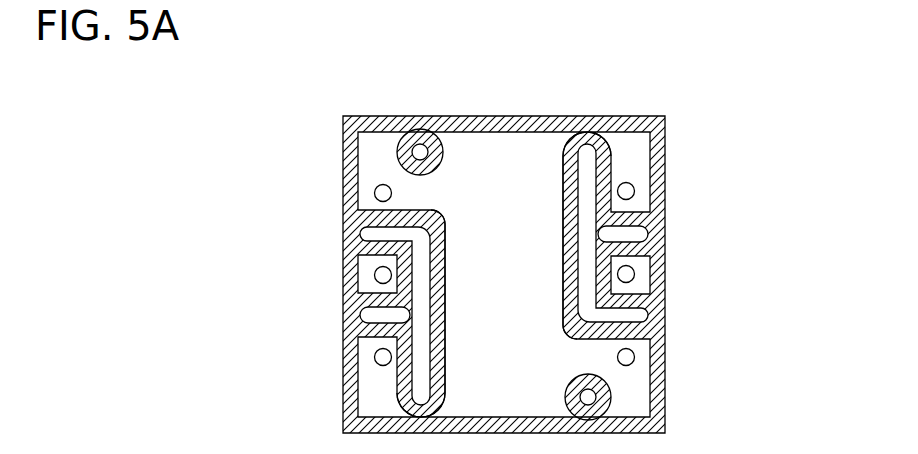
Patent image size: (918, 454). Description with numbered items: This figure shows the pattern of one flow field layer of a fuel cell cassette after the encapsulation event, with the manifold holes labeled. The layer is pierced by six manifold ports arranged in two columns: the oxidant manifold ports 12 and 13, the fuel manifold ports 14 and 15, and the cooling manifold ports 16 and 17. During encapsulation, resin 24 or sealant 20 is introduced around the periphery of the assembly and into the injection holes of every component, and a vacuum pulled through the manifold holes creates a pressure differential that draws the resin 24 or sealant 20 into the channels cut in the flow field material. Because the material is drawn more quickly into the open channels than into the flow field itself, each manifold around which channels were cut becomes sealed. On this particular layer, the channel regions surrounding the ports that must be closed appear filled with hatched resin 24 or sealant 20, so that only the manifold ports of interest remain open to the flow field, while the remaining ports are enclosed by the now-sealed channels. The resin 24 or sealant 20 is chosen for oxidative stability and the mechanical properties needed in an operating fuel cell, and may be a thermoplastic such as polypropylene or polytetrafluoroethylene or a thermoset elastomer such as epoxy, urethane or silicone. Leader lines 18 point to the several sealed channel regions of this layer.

The oxidant manifold port 12 is at (635, 357).
The oxidant manifold port 13 is at (374, 193).
The fuel manifold port 14 is at (635, 191).
The fuel manifold port 15 is at (374, 357).
The cooling manifold port 16 is at (635, 274).
The cooling manifold port 17 is at (374, 275).
The flow channel walls 18 is at (581, 374).
The sealant 20 is at (611, 150).
The resin 24 is at (658, 132).